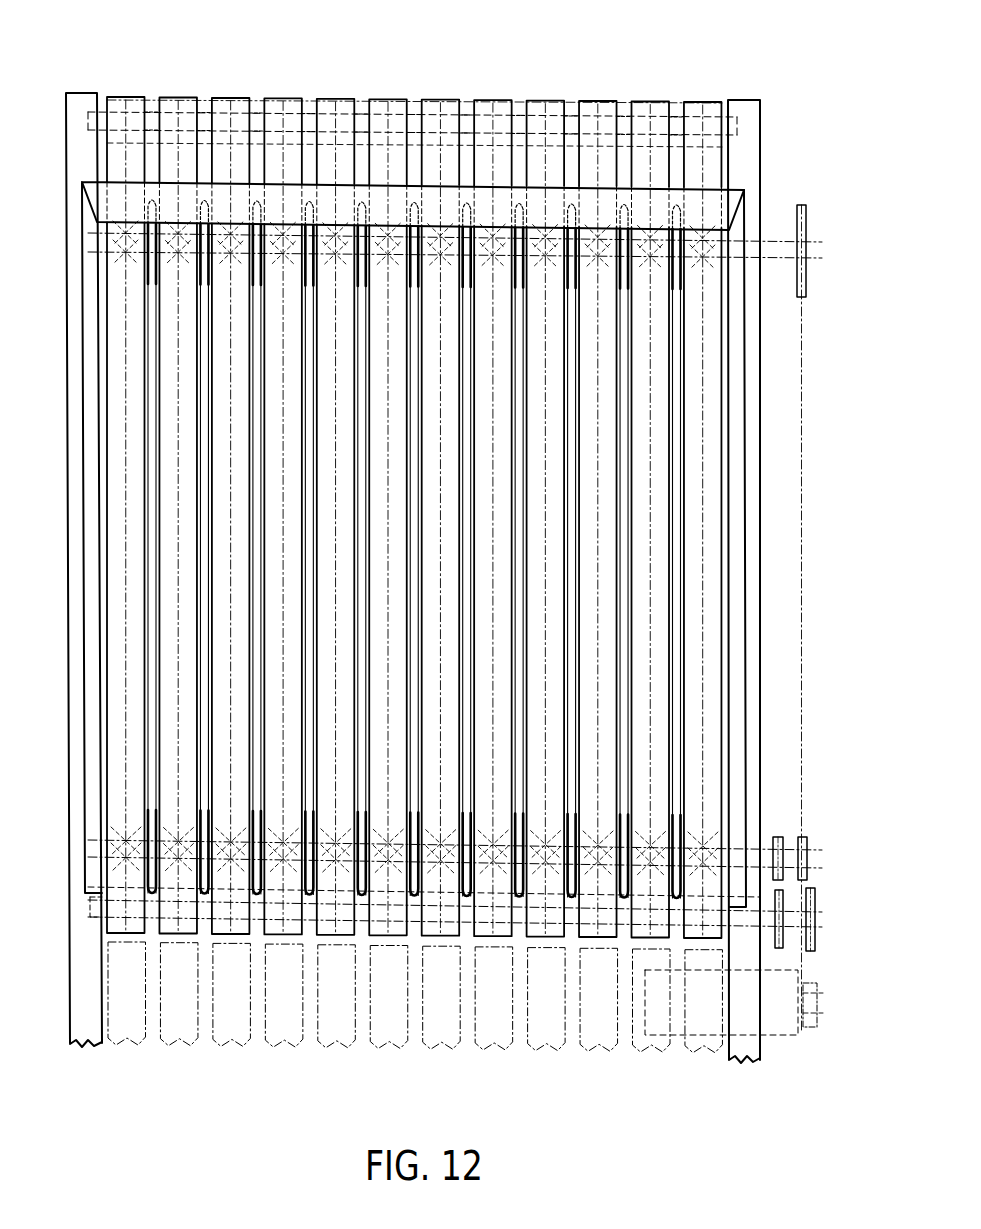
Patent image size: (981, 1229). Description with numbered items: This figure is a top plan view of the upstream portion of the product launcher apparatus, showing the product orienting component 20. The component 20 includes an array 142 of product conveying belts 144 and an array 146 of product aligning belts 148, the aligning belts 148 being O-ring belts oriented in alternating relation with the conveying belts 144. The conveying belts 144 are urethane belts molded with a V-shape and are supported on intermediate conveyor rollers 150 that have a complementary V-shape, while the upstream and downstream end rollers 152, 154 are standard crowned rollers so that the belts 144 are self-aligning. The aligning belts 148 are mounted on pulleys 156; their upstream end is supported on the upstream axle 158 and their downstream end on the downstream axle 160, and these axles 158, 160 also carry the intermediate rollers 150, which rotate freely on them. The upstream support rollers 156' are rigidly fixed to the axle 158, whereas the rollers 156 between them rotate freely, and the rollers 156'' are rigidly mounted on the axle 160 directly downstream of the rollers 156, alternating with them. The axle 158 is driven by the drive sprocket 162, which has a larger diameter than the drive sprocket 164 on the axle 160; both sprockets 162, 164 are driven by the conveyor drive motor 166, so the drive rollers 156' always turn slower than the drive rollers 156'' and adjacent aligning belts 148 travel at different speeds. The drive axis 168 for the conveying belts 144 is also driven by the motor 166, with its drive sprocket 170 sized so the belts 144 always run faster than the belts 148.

The product orienting component 20 is at (745, 93).
The array of product conveying belts 142 is at (337, 97).
The product conveying belts 144 is at (282, 97).
The array of product aligning belts 146 is at (677, 423).
The product aligning belts 148 is at (152, 443).
The intermediate conveyor rollers 150 is at (97, 280).
The upstream end roller 152 is at (717, 90).
The downstream end roller 154 is at (100, 920).
The pulleys 156 is at (424, 283).
The upstream support rollers 156' is at (415, 179).
The downstream drive rollers 156'' is at (421, 833).
The upstream axle 158 is at (778, 243).
The downstream axle 160 is at (767, 852).
The drive sprocket 162 is at (807, 227).
The drive sprocket 164 is at (805, 838).
The conveyor drive motor 166 is at (786, 1036).
The drive axis 168 is at (788, 913).
The drive sprocket 170 is at (813, 942).